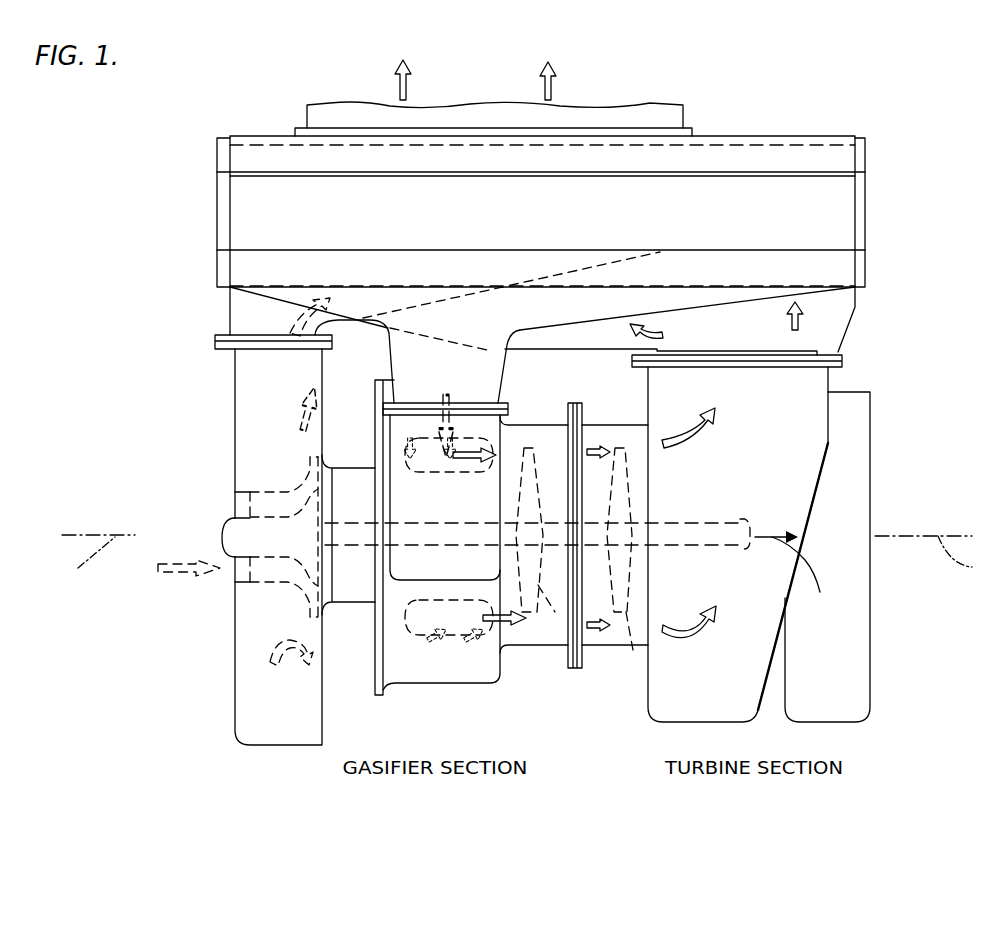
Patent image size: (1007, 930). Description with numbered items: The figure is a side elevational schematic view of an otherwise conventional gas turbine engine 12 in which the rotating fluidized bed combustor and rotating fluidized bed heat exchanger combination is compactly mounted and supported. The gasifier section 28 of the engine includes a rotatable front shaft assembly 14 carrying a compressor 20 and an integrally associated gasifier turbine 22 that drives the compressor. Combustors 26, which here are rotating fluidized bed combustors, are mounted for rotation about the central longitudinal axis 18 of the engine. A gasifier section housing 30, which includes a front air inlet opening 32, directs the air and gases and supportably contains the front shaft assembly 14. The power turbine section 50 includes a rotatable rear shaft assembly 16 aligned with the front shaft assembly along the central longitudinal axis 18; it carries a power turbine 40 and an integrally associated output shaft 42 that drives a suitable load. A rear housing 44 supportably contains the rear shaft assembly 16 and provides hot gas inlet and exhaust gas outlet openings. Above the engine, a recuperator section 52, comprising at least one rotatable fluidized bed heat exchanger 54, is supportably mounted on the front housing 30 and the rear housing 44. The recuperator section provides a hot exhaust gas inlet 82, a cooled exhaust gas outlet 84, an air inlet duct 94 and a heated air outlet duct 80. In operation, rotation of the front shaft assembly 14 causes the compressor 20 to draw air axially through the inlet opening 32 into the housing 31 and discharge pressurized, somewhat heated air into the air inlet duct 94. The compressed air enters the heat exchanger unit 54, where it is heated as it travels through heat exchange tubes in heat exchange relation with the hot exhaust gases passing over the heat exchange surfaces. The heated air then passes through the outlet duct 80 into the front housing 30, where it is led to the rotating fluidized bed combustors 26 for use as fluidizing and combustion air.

The gas turbine engine 12 is at (175, 586).
The front shaft assembly 14 is at (404, 548).
The rear shaft assembly 16 is at (667, 544).
The central longitudinal axis 18 is at (526, 558).
The compressor 20 is at (278, 490).
The gasifier turbine 22 is at (542, 542).
The combustors 26 is at (432, 472).
The gasifier section 28 is at (422, 683).
The gasifier section housing 30 is at (472, 686).
The housing 31 is at (235, 390).
The air inlet opening 32 is at (230, 580).
The power turbine 40 is at (631, 647).
The output shaft 42 is at (739, 523).
The rear housing 44 is at (650, 704).
The power turbine section 50 is at (722, 702).
The recuperator section 52 is at (267, 137).
The rotatable fluidized bed heat exchanger 54 is at (561, 218).
The heated air outlet duct 80 is at (392, 354).
The hot exhaust gas inlet 82 is at (838, 353).
The cooled exhaust gas outlet 84 is at (686, 116).
The air inlet duct 94 is at (231, 316).